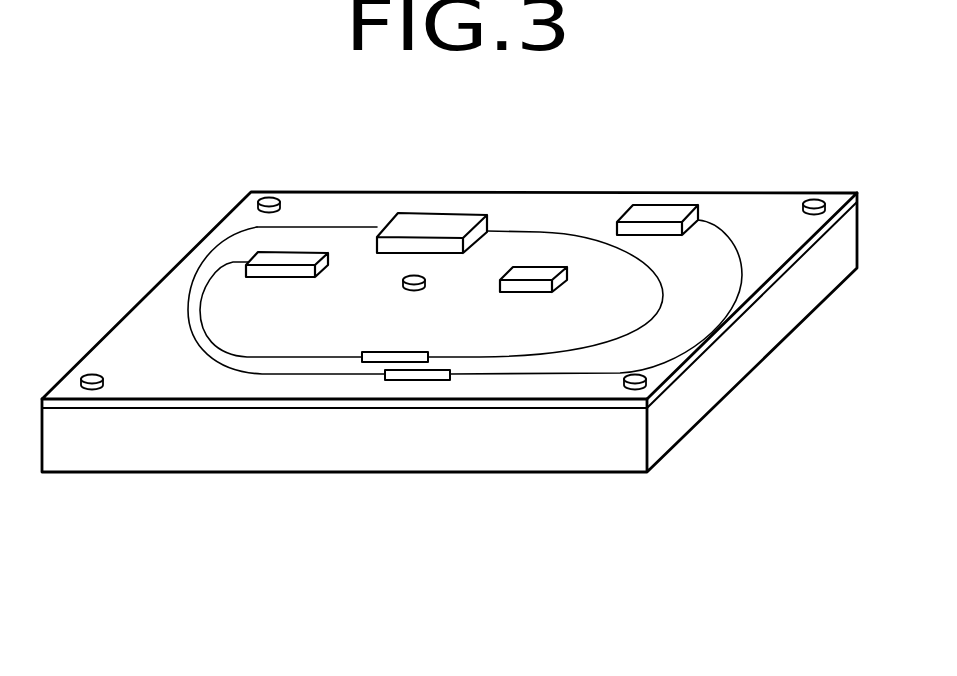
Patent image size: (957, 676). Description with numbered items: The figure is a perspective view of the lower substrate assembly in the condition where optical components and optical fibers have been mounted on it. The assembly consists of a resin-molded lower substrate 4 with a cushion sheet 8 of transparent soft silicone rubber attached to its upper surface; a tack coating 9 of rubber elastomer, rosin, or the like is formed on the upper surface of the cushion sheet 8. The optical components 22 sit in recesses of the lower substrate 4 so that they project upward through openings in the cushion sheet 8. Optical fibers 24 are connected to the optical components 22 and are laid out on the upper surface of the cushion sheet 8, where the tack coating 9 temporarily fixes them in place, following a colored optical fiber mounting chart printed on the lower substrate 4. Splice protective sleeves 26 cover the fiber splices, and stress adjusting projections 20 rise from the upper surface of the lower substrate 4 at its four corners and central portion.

The lower substrate 4 is at (527, 462).
The cushion sheet 8 is at (160, 303).
The tack coating 9 is at (558, 205).
The stress adjusting projections 20 is at (269, 197).
The optical components 22 is at (295, 255).
The optical fibers 24 is at (662, 313).
The splice protective sleeves 26 is at (373, 358).